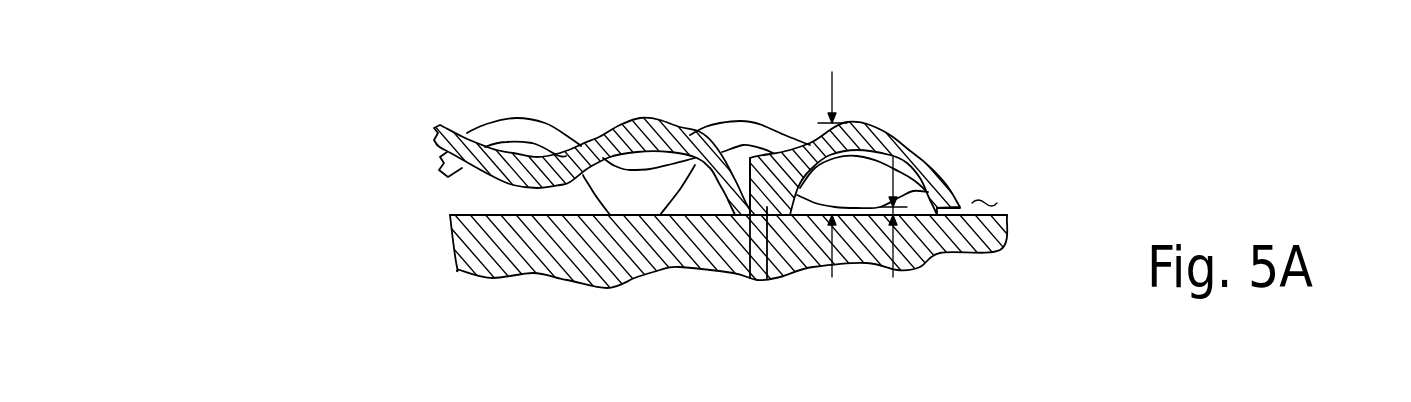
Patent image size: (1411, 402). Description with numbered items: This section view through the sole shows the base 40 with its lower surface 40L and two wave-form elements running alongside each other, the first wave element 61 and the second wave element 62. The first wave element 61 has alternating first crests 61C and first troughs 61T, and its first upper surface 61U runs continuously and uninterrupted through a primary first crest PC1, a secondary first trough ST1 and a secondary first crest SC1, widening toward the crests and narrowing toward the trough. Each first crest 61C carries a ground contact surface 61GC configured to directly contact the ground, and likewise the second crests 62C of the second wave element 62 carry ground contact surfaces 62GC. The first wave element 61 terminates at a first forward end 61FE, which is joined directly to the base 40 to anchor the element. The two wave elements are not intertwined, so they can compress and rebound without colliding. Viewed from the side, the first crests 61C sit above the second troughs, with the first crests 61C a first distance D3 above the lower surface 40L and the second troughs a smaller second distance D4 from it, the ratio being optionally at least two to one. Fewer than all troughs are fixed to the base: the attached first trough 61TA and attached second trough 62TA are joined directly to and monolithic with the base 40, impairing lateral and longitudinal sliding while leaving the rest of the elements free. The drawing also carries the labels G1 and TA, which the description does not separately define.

The base 40 is at (450, 237).
The lower surface of the base 40L is at (473, 217).
The first wave element 61 is at (442, 126).
The second wave element 62 is at (442, 170).
The ground contact surface 61GC is at (443, 125).
The first crest 61C is at (453, 125).
The ground contact surface 62GC is at (532, 120).
The second crest 62C is at (540, 125).
The secondary first crest SC1 is at (463, 132).
The secondary first trough ST1 is at (580, 160).
The primary first crest PC1 is at (667, 124).
The first upper surface 61U is at (890, 137).
The first forward end 61FE is at (960, 208).
The first gap G1 is at (987, 191).
The first trough 61T is at (540, 177).
The attached second trough 62TA is at (632, 208).
The attached first trough 61TA is at (750, 278).
The contact area TA is at (768, 278).
The first distance D3 is at (832, 187).
The second distance D4 is at (893, 229).